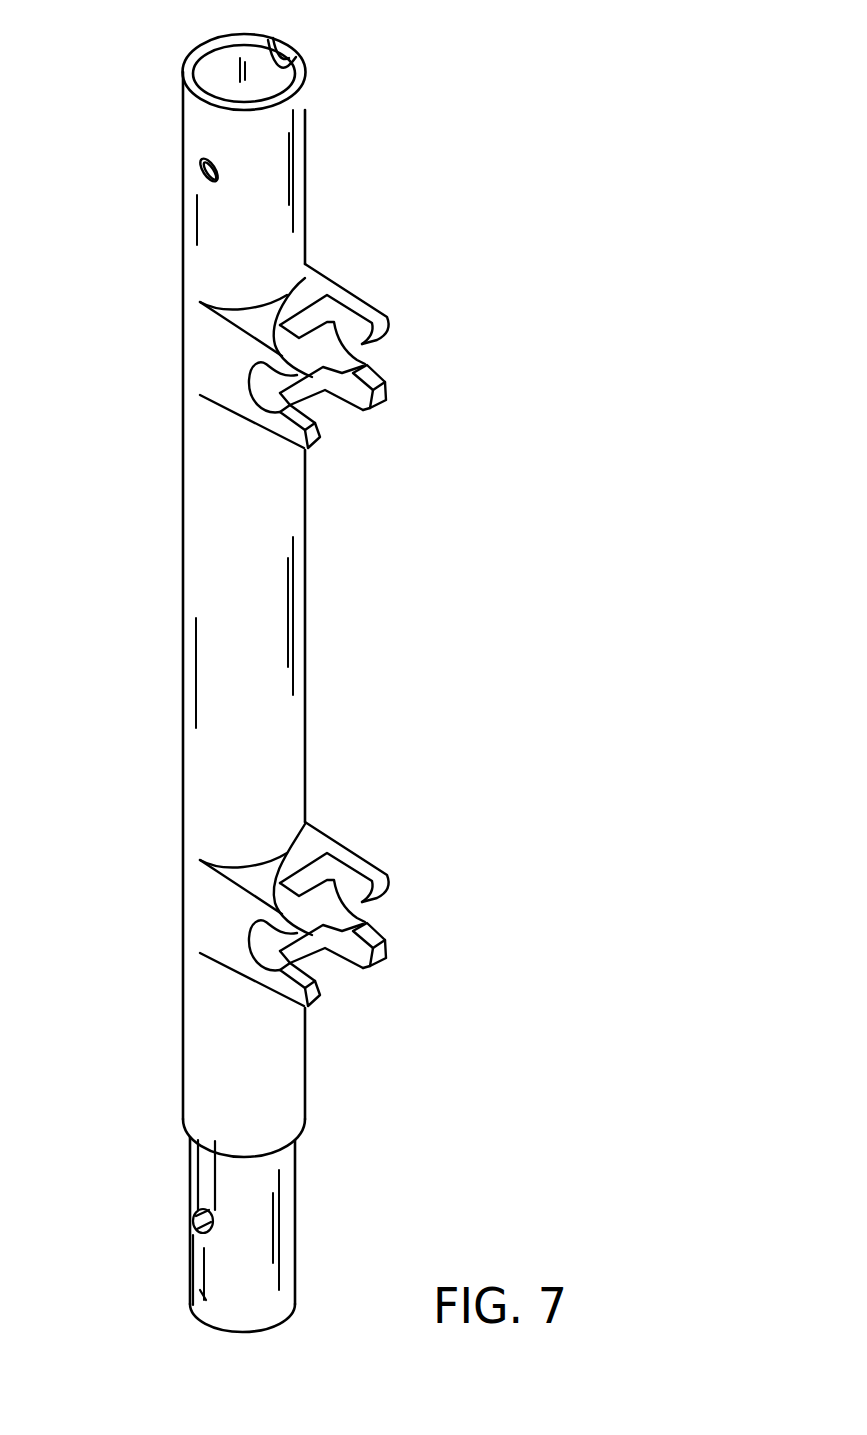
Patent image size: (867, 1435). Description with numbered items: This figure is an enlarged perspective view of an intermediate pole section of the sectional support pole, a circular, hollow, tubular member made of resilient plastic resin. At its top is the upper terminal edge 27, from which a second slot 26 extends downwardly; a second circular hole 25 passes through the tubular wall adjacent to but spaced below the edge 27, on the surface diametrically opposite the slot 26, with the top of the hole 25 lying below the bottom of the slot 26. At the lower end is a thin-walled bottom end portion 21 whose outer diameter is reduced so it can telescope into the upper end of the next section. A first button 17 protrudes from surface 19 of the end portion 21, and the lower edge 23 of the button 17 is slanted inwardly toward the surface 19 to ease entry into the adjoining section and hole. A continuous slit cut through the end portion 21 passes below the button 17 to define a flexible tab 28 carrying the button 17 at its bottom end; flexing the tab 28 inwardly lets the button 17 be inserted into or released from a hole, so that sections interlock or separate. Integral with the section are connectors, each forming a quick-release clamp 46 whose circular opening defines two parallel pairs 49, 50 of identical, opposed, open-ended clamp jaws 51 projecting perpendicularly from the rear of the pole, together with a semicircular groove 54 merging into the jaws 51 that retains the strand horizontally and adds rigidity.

The first button 17 is at (193, 1220).
The surface 19 is at (223, 1278).
The bottom end portion 21 is at (295, 1220).
The lower edge 23 is at (193, 1242).
The second circular hole 25 is at (201, 173).
The second slot 26 is at (283, 52).
The upper terminal edge 27 is at (190, 50).
The flexible tab 28 is at (205, 1173).
The quick-release fastener or clamp 46 is at (220, 373).
The first pair of clamp jaws 49 is at (393, 875).
The second pair of clamp jaws 50 is at (305, 278).
The clamp jaws 51 is at (305, 437).
The semicircular groove 54 is at (270, 378).